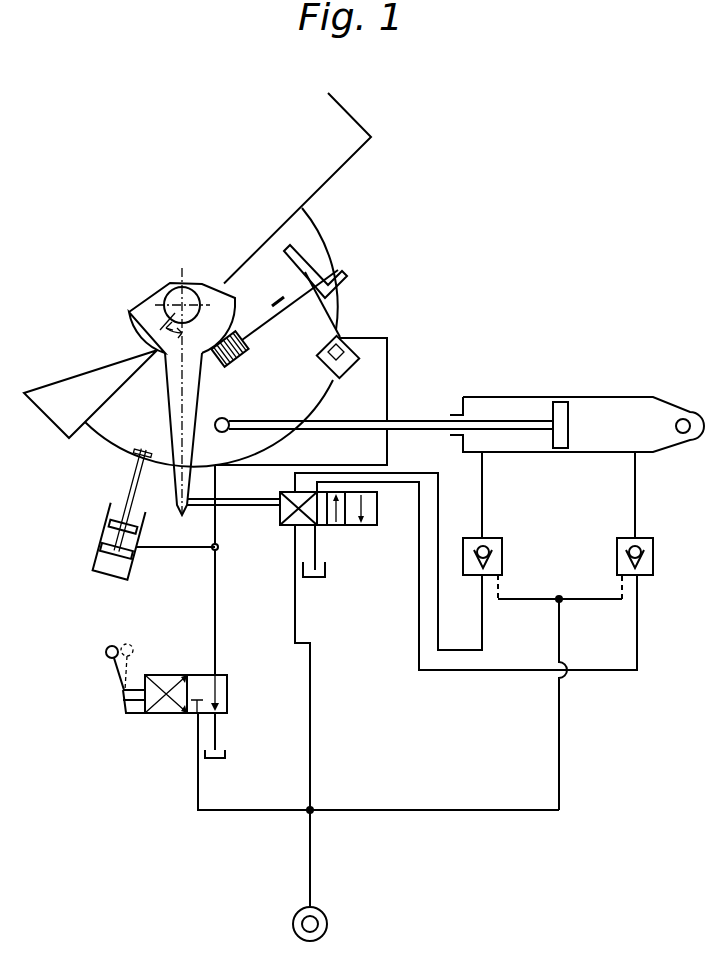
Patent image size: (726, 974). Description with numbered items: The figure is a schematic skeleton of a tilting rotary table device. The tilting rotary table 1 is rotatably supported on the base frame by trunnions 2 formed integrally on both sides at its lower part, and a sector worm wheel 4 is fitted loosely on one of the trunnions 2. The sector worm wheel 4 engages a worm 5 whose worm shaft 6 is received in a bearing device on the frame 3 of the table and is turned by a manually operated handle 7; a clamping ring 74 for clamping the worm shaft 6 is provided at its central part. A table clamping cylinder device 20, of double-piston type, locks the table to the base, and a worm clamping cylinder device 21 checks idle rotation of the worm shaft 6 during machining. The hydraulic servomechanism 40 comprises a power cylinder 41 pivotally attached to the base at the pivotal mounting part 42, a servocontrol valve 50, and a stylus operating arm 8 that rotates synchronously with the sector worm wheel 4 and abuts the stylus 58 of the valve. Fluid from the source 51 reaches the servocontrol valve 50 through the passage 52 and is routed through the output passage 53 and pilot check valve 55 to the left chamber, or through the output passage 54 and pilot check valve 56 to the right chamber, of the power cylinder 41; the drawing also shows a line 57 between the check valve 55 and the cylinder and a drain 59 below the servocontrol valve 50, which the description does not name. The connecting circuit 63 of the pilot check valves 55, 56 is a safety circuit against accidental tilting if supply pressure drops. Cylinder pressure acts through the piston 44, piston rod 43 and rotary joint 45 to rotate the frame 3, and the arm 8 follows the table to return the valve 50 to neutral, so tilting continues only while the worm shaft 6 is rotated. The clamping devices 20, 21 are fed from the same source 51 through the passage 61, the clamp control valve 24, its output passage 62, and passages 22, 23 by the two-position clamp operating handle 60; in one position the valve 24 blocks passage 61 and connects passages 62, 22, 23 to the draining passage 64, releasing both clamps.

The tilting rotary table 1 is at (358, 150).
The trunnions 2 is at (168, 288).
The frame 3 is at (312, 230).
The sector worm wheel 4 is at (211, 297).
The worm 5 is at (243, 352).
The worm shaft 6 is at (258, 322).
The manually operated handle 7 is at (344, 282).
The stylus operating arm 8 is at (170, 396).
The table clamping cylinder device 20 is at (85, 553).
The worm clamping cylinder device 21 is at (354, 336).
The passage 22 is at (165, 549).
The passage 23 is at (300, 474).
The clamp control valve 24 is at (163, 675).
The hydraulic servomechanism 40 is at (508, 381).
The power cylinder 41 is at (613, 397).
The pivotal mounting part 42 is at (687, 419).
The piston rod 43 is at (420, 420).
The piston 44 is at (565, 400).
The rotary joint 45 is at (219, 418).
The servocontrol valve 50 is at (283, 527).
The source of pressurized hydraulic fluid 51 is at (327, 924).
The passage 52 is at (311, 753).
The output passage 53 is at (421, 474).
The output passage 54 is at (400, 484).
The pilot check valve 55 is at (503, 543).
The pilot check valve 56 is at (654, 543).
The pipe line 57 is at (482, 490).
The stylus 58 is at (654, 486).
The tank 59 is at (315, 578).
The clamp operating handle 60 is at (110, 670).
The passage 61 is at (240, 811).
The output passage 62 is at (216, 632).
The connecting circuit 63 is at (561, 785).
The draining passage 64 is at (216, 732).
The clamping ring 74 is at (276, 300).